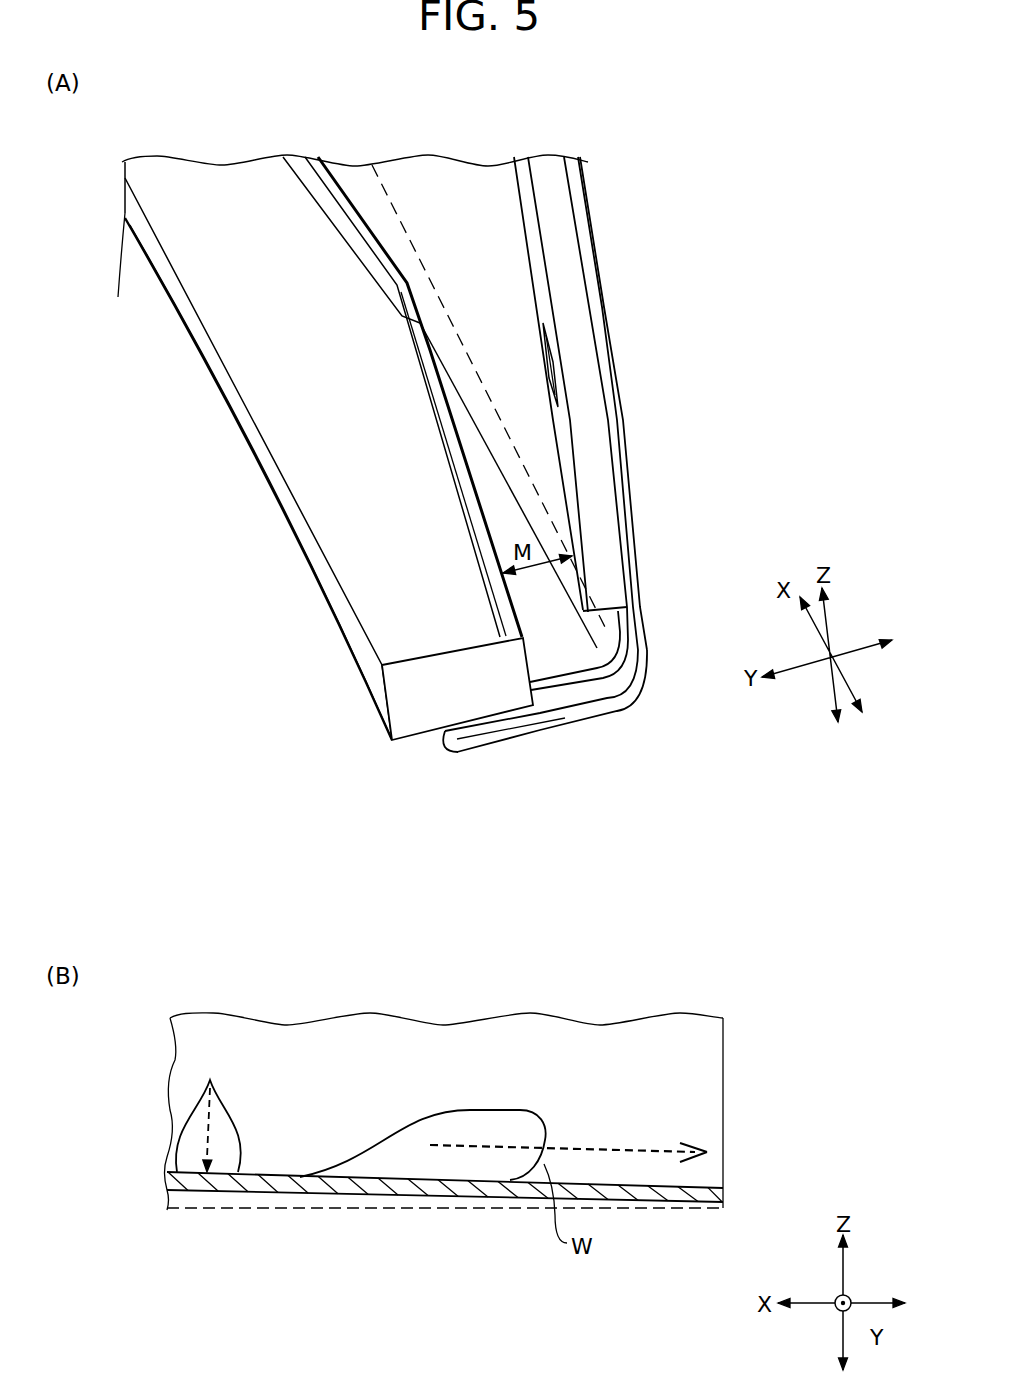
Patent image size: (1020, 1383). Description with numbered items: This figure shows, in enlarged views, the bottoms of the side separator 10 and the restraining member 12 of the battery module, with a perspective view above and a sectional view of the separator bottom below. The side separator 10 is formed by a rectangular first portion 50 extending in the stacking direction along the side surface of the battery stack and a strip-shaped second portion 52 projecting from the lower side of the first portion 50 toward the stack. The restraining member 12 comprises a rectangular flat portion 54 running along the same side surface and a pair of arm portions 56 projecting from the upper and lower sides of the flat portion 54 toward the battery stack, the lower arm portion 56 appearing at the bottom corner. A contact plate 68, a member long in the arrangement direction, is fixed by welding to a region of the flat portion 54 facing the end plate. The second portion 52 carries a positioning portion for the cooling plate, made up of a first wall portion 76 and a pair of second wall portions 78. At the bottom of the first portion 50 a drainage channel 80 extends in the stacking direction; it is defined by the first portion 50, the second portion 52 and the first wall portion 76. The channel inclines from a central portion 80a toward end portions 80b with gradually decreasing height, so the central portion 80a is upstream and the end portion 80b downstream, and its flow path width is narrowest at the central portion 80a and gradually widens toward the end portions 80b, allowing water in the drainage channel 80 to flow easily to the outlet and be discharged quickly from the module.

The side separator 10 is at (312, 589).
The restraining member 12 is at (651, 688).
The first portion 50 is at (481, 162).
The second portion 52 is at (192, 355).
The flat portion 54 is at (603, 306).
The arm portion 56 is at (521, 745).
The contact plate 68 is at (602, 538).
The first wall portion 76 is at (293, 158).
The second wall portion 78 is at (406, 705).
The drainage channel 80 is at (577, 652).
The central portion 80a is at (420, 293).
The end portion 80b is at (590, 638).